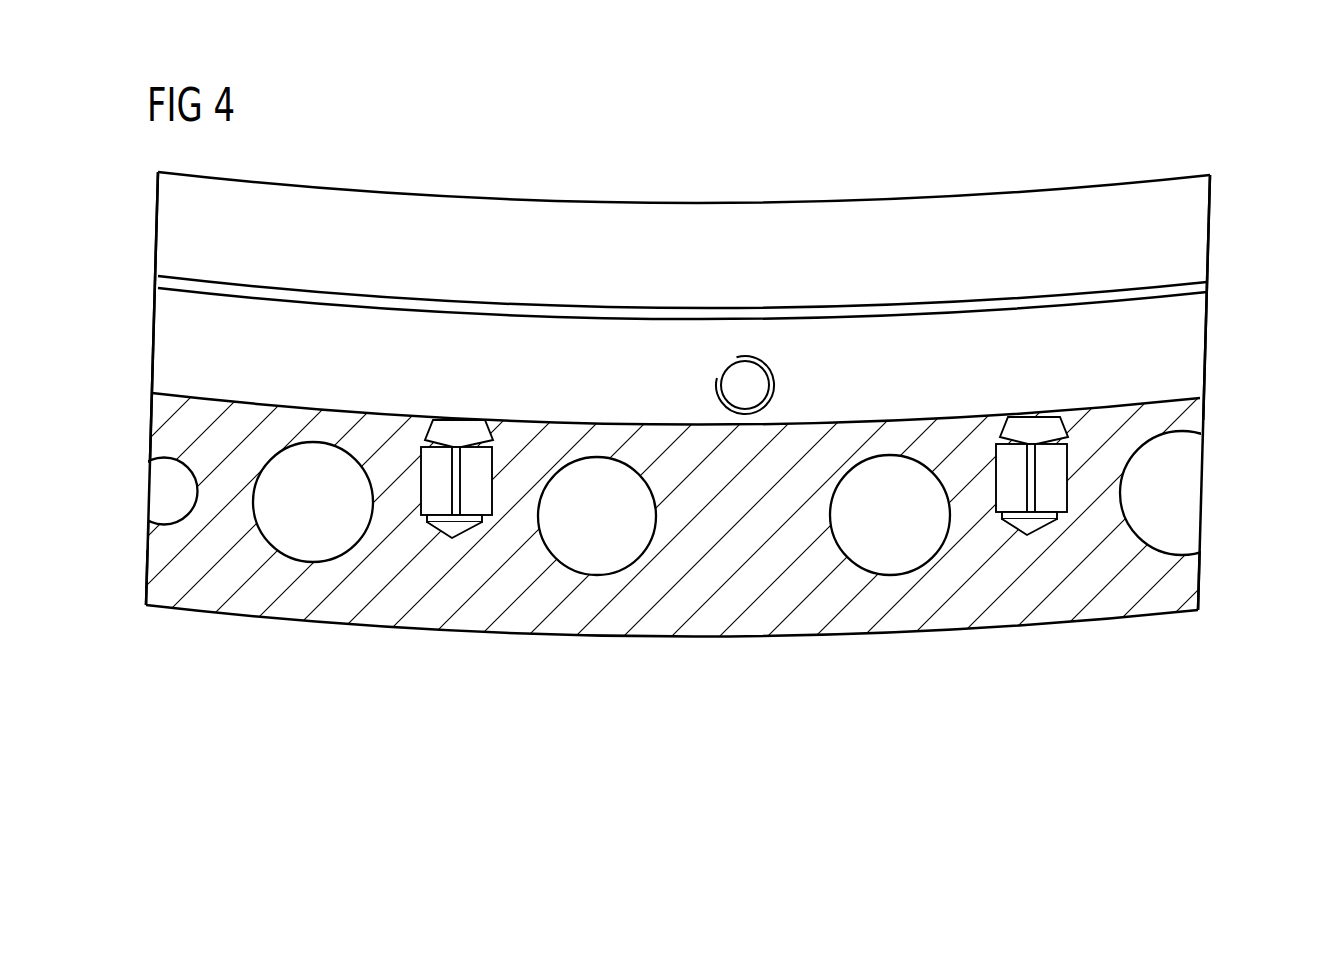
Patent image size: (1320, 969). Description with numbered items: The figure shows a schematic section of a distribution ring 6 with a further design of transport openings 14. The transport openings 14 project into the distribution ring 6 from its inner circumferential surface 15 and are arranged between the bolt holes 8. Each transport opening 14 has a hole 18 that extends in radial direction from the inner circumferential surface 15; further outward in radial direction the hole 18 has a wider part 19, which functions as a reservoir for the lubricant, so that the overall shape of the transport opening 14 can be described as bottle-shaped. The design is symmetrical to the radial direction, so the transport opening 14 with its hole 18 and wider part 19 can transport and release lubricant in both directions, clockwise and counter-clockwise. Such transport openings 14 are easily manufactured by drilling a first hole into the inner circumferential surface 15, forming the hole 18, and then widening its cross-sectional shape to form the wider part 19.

The distribution ring 6 is at (1193, 345).
The bolt holes 8 is at (895, 470).
The transport opening 14 is at (467, 542).
The inner circumferential surface 15 is at (405, 414).
The hole 18 is at (460, 430).
The wider part 19 is at (480, 490).